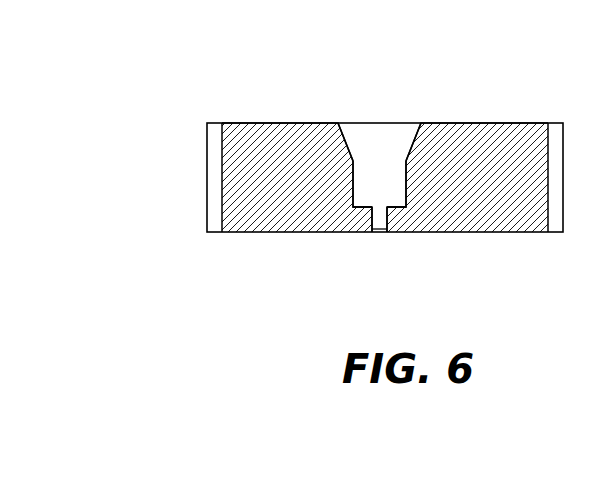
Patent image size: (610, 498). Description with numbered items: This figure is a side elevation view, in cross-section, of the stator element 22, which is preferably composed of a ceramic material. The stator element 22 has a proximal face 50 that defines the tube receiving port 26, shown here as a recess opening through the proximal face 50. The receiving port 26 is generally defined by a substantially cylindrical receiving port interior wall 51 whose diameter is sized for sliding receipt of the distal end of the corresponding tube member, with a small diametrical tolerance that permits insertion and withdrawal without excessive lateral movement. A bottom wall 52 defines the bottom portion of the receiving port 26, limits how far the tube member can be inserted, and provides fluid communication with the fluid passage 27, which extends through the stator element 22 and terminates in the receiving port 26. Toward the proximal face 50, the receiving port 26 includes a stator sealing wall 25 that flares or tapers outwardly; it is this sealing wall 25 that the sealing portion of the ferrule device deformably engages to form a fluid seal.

The stator element 22 is at (200, 176).
The proximal face 50 is at (496, 123).
The stator sealing wall 25 is at (351, 136).
The receiving port 26 is at (377, 170).
The fluid passage 27 is at (372, 230).
The receiving port interior wall 51 is at (405, 195).
The bottom wall 52 is at (366, 207).